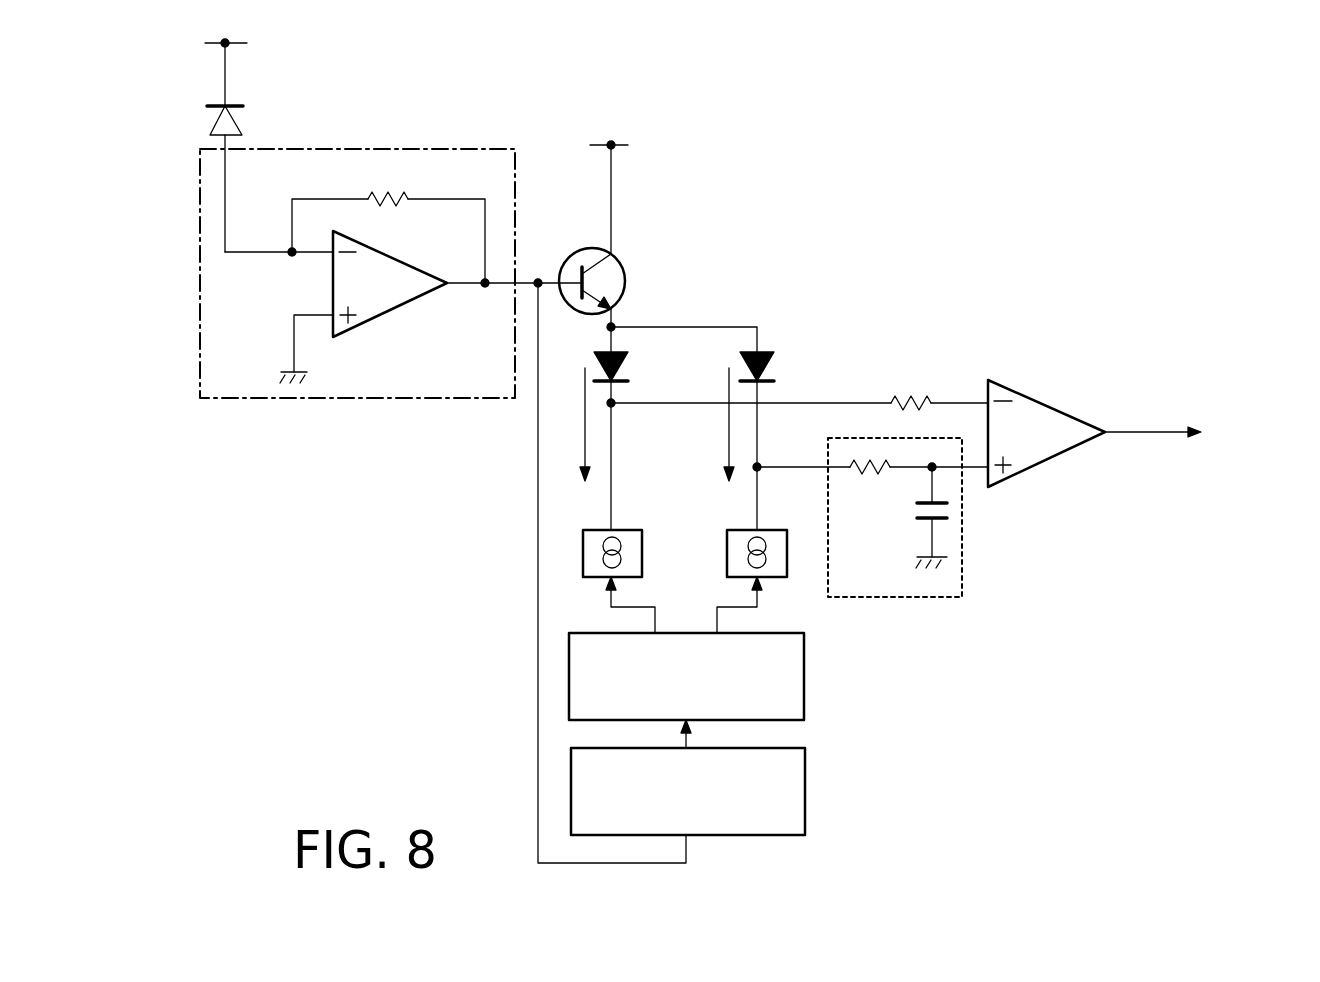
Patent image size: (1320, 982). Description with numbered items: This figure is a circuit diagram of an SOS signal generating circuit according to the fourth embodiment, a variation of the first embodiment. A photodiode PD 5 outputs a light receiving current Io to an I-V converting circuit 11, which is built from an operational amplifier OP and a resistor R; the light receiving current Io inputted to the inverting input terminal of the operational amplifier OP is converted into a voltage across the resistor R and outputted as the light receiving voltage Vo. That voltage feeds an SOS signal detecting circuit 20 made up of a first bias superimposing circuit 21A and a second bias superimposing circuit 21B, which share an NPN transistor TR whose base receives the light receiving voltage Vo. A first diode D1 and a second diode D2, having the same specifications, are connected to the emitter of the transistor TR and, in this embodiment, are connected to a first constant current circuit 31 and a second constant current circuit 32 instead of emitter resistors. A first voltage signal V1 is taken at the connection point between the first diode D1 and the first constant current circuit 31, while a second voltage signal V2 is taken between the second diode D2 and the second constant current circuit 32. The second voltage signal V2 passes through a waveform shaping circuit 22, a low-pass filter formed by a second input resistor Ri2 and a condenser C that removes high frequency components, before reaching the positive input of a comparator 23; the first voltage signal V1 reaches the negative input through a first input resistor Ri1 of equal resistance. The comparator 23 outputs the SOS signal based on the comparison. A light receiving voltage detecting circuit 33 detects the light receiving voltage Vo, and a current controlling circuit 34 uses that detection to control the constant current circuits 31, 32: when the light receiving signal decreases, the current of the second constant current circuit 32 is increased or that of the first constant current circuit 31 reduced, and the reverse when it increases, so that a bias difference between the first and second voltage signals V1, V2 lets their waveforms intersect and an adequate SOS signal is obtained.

The PD 5 is at (207, 121).
The I-V converting circuit 11 is at (200, 337).
The SOS signal detecting circuit 20 is at (821, 122).
The first bias superimposing circuit 21A is at (660, 366).
The second bias superimposing circuit 21B is at (810, 366).
The waveform shaping circuit 22 is at (908, 547).
The comparator 23 is at (1052, 404).
The first constant current circuit 31 is at (647, 543).
The second constant current circuit 32 is at (725, 555).
The light receiving voltage detecting circuit 33 is at (808, 790).
The current controlling circuit 34 is at (838, 681).
The light receiving current Io is at (226, 197).
The resistor R is at (398, 185).
The operational amplifier OP is at (388, 311).
The light receiving voltage Vo is at (460, 284).
The NPN transistor TR is at (580, 252).
The first diode D1 is at (656, 370).
The second diode D2 is at (801, 370).
The first voltage signal V1 is at (675, 405).
The second voltage signal V2 is at (781, 466).
The first input resistor Ri1 is at (915, 386).
The second input resistor Ri2 is at (866, 479).
The condenser C is at (913, 513).
The SOS signal SOS is at (1185, 433).